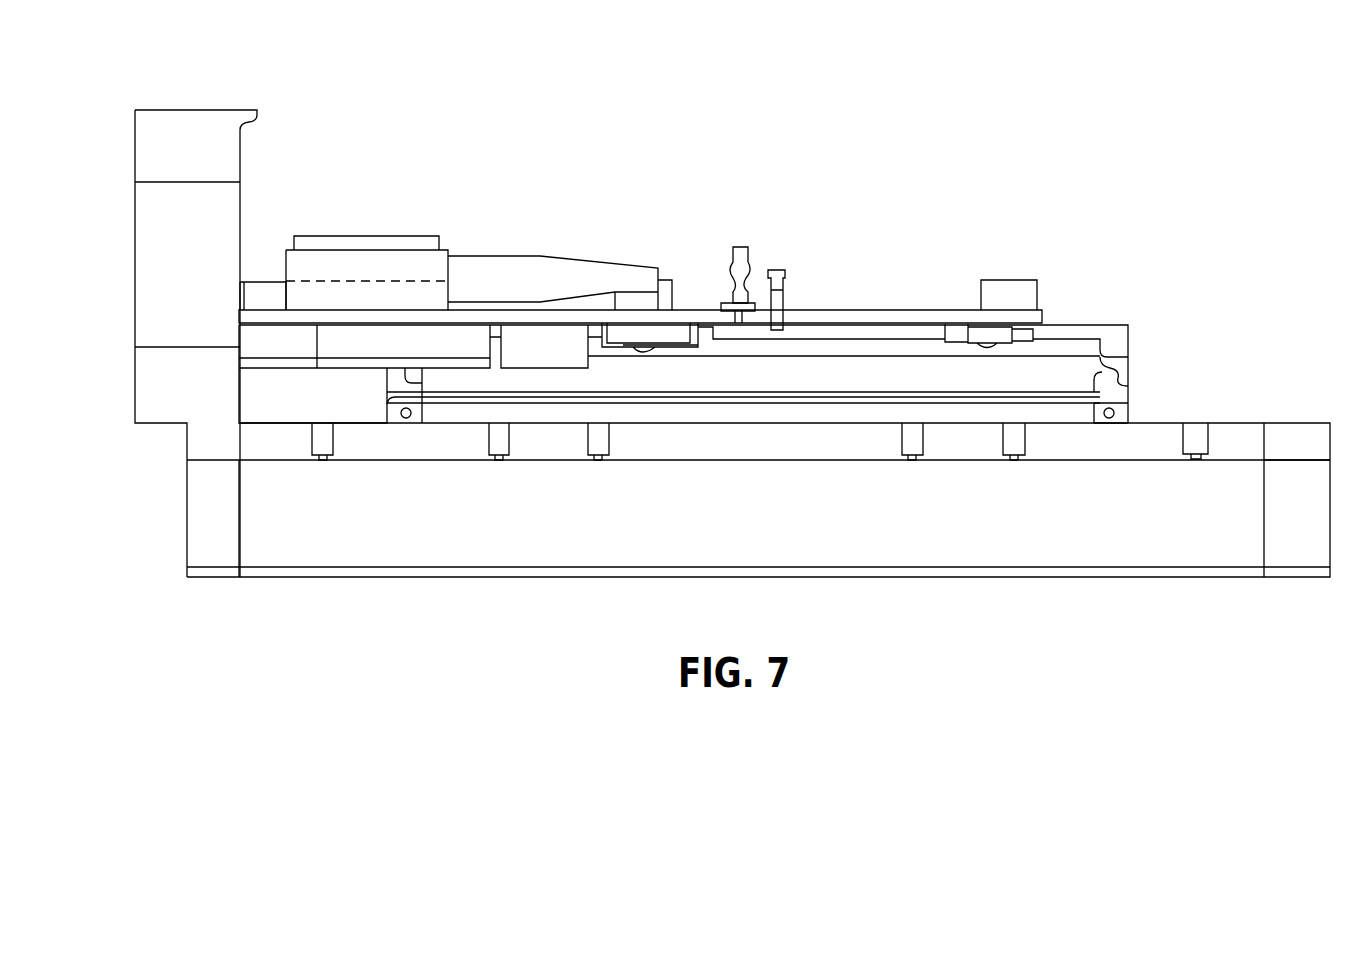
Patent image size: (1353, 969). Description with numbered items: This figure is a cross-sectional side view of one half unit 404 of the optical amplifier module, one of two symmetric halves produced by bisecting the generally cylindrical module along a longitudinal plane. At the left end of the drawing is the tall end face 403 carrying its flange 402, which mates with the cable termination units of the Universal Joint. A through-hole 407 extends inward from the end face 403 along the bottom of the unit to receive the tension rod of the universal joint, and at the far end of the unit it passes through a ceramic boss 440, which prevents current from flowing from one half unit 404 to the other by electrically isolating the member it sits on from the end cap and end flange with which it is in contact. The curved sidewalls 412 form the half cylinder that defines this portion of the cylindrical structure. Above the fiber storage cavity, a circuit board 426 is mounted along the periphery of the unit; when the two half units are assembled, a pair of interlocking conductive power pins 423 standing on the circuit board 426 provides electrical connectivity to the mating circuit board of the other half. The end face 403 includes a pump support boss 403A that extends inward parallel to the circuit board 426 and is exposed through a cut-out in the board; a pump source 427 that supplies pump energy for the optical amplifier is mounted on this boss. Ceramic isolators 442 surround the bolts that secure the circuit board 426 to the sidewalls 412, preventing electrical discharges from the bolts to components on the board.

The flange 402 is at (143, 290).
The end face 403 is at (193, 118).
The pump support boss 403A is at (290, 348).
The half unit 404 is at (593, 578).
The through-hole 407 is at (387, 553).
The curved sidewall 412 is at (1158, 432).
The interlocking conductive power pin 423 is at (773, 268).
The circuit board 426 is at (868, 313).
The pump source 427 is at (363, 258).
The ceramic boss 440 is at (1298, 552).
The ceramic isolator 442 is at (672, 281).